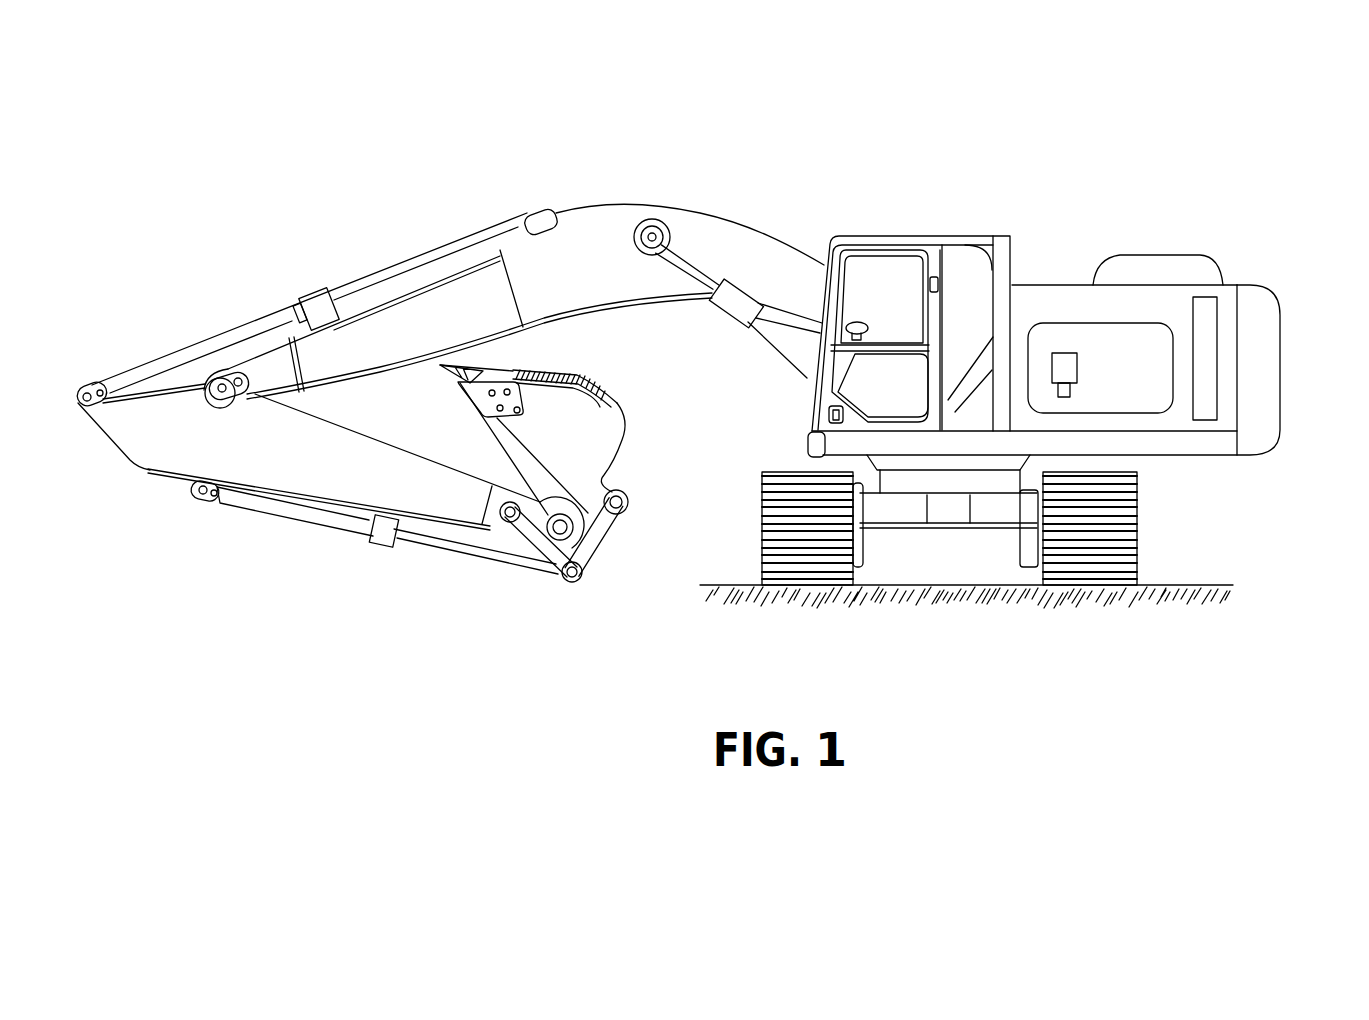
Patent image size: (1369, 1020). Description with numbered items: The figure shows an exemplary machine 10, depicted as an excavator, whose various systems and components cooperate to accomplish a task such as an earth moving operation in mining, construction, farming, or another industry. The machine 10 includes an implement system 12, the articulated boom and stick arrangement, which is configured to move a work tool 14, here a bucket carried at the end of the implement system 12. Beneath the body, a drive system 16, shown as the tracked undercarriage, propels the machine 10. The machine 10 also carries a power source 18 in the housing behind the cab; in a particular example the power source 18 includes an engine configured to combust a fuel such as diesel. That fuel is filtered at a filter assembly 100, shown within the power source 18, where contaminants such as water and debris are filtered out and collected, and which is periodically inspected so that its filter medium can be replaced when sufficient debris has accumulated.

The machine 10 is at (1150, 150).
The implement system 12 is at (578, 172).
The work tool 14 is at (619, 419).
The drive system 16 is at (1283, 455).
The power source 18 is at (1058, 322).
The filter assembly 100 is at (1079, 365).